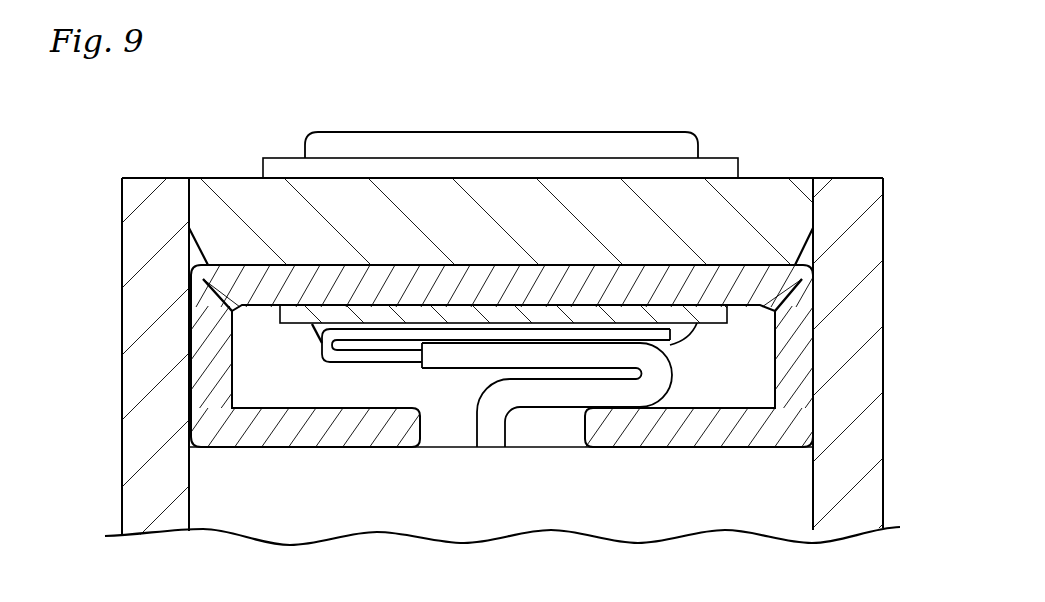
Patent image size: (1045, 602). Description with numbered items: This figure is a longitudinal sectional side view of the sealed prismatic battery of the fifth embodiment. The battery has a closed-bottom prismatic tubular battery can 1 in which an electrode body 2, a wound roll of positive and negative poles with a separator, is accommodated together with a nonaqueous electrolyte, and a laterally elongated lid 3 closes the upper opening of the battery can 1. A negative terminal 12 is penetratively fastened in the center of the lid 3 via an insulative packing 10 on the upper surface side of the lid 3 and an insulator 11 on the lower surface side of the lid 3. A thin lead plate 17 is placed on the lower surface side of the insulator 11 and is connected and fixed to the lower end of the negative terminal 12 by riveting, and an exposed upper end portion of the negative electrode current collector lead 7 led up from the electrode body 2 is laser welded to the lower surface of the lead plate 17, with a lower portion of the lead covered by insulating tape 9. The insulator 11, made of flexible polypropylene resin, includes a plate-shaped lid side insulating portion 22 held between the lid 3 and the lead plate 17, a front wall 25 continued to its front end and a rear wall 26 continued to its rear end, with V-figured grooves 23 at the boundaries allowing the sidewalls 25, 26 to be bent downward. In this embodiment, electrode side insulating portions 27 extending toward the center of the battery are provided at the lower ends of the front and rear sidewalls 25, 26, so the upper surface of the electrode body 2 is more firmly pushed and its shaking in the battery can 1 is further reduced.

The battery can 1 is at (122, 256).
The electrode body 2 is at (372, 502).
The lid 3 is at (760, 178).
The negative electrode current collector lead 7 is at (375, 360).
The insulating tape 9 is at (544, 398).
The insulative packing 10 is at (717, 158).
The insulator 11 is at (491, 252).
The negative terminal 12 is at (497, 142).
The lead plate 17 is at (660, 316).
The lid side insulating portion 22 is at (333, 285).
The V-figured groove 23 is at (203, 280).
The front wall 25 is at (203, 343).
The rear wall 26 is at (802, 375).
The electrode side insulating portion 27 is at (333, 436).